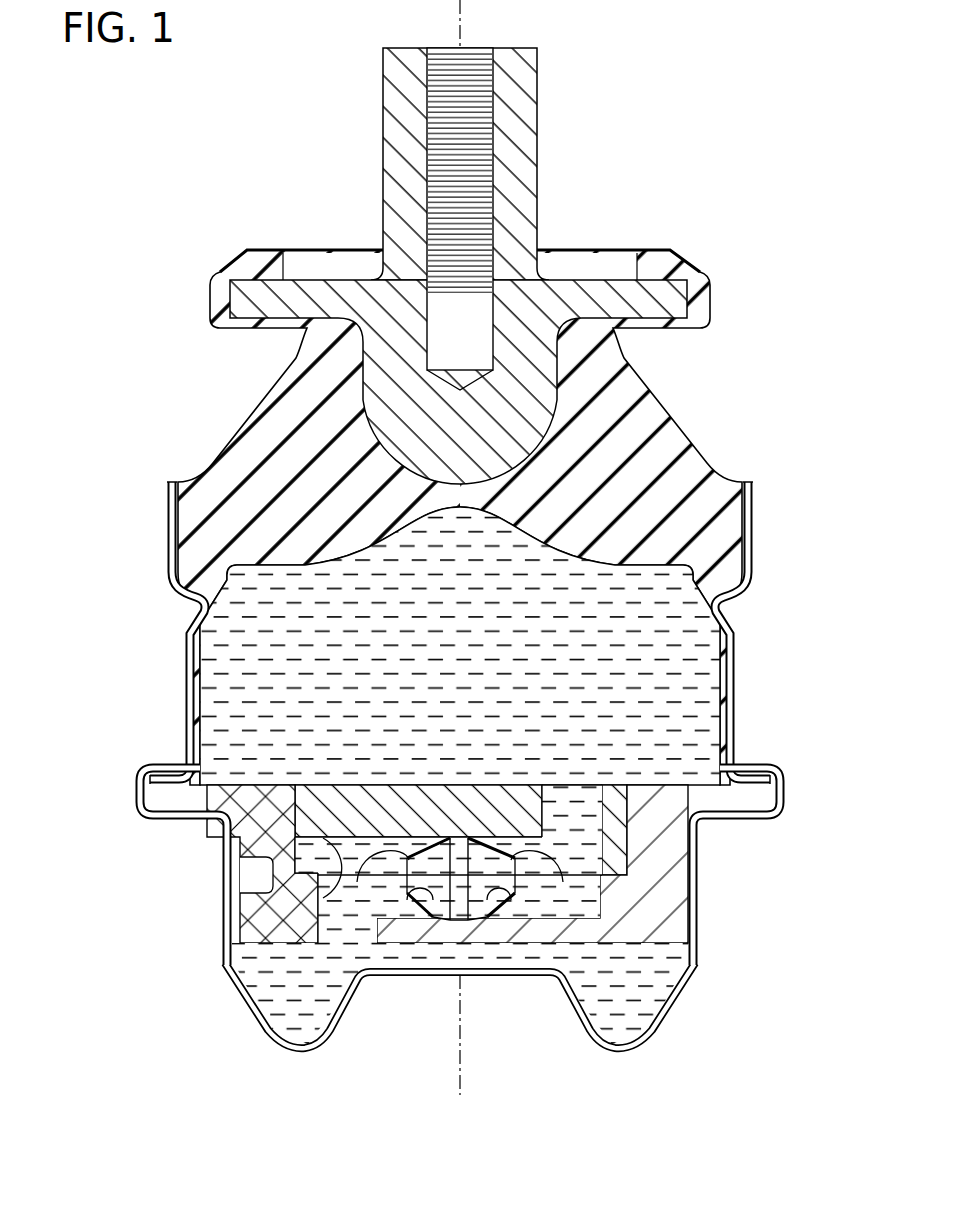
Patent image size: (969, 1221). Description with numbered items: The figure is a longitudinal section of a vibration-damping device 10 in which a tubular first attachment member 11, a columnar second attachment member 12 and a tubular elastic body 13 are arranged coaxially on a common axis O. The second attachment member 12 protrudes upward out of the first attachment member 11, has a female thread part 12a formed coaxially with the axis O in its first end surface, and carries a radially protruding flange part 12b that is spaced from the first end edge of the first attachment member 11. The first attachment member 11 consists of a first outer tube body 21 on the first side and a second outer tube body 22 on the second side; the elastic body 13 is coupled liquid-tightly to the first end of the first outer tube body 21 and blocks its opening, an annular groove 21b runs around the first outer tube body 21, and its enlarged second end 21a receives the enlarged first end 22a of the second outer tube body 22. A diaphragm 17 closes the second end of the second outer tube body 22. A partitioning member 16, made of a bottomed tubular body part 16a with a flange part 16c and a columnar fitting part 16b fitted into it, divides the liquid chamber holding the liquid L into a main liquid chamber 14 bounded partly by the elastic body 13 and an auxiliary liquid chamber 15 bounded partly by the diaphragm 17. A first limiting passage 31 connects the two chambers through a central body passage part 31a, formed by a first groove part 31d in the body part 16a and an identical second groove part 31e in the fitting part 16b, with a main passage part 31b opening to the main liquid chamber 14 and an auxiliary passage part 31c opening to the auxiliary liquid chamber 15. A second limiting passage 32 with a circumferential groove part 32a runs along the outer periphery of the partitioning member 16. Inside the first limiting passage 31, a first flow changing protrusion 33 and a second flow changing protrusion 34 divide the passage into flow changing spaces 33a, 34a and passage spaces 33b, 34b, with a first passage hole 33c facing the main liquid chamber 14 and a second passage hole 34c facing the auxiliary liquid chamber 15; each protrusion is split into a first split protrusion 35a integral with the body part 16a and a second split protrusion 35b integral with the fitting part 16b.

The vibration-damping device 10 is at (758, 98).
The first attachment member 11 is at (790, 773).
The second attachment member 12 is at (458, 242).
The female thread part 12a is at (470, 58).
The flange part 12b is at (578, 280).
The elastic body 13 is at (676, 430).
The main liquid chamber 14 is at (660, 673).
The auxiliary liquid chamber 15 is at (638, 990).
The partitioning member 16 is at (572, 833).
The body part 16a is at (665, 915).
The fitting part 16b is at (620, 850).
The flange part 16c is at (700, 790).
The diaphragm 17 is at (668, 1006).
The first outer tube body 21 is at (455, 641).
The second end 21a is at (142, 803).
The annular groove 21b is at (722, 602).
The second outer tube body 22 is at (510, 866).
The first end 22a is at (778, 800).
The first limiting passage 31 is at (308, 772).
The body passage part 31a is at (115, 645).
The main passage part 31b is at (566, 783).
The auxiliary passage part 31c is at (305, 905).
The first groove part 31d is at (330, 868).
The second groove part 31e is at (320, 917).
The second limiting passage 32 is at (221, 864).
The circumferential groove part 32a is at (252, 870).
The first flow changing protrusion 33 is at (570, 996).
The flow changing space 33a is at (500, 920).
The passage space 33b is at (478, 893).
The first passage hole 33c is at (548, 864).
The second flow changing protrusion 34 is at (341, 996).
The flow changing space 34a is at (420, 920).
The passage space 34b is at (442, 893).
The second passage hole 34c is at (372, 864).
The first split protrusion 35a is at (507, 863).
The second split protrusion 35b is at (517, 893).
The axis O is at (452, 24).
The liquid L is at (248, 623).